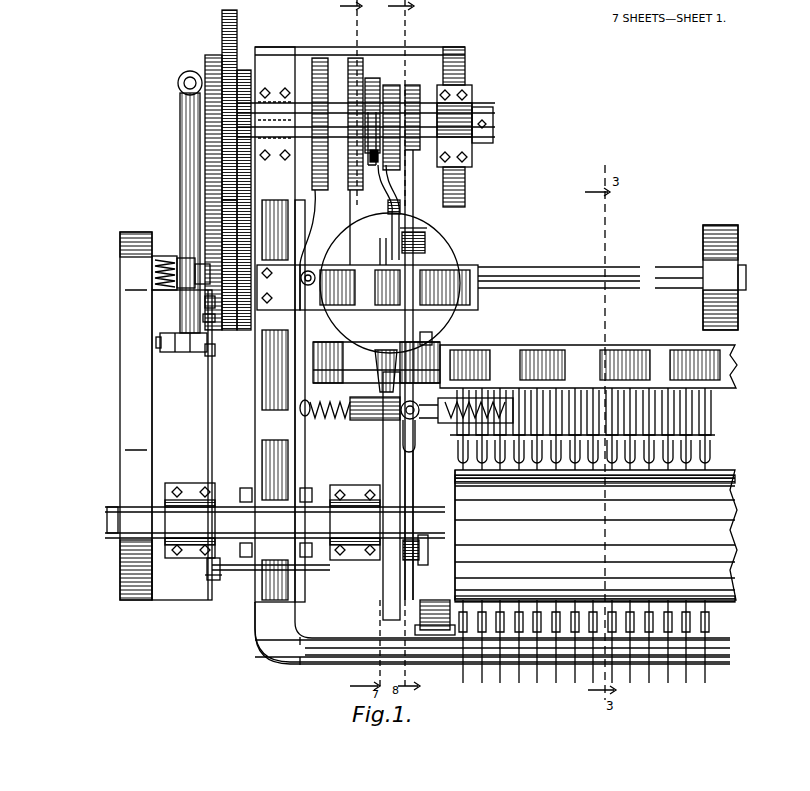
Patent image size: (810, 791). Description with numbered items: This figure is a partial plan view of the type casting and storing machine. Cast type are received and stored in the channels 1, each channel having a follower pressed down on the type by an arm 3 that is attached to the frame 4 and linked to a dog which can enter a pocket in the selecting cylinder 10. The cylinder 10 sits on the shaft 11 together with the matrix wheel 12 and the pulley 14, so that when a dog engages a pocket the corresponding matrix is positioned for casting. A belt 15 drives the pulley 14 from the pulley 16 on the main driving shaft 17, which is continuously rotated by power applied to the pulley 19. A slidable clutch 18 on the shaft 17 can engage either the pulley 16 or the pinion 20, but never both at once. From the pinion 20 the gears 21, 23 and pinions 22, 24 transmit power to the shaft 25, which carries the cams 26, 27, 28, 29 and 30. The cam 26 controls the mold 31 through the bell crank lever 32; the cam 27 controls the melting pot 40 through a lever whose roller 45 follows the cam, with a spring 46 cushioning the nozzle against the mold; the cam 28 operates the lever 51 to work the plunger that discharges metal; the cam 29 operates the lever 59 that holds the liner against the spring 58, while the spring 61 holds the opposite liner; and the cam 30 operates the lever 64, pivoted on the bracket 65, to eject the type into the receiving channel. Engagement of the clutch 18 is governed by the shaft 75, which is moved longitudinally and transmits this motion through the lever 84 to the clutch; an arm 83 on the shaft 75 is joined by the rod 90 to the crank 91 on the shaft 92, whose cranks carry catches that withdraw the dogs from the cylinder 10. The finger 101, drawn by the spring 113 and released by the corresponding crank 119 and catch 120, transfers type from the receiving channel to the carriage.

The channel 1 is at (606, 395).
The arm 3 is at (528, 458).
The frame 4 is at (330, 670).
The selecting cylinder 10 is at (596, 536).
The shaft 11 is at (275, 521).
The matrix wheel 12 is at (382, 585).
The pulley 14 is at (120, 572).
The belt 15 is at (136, 416).
The pulley 16 is at (130, 260).
The shaft 17 is at (556, 276).
The clutch 18 is at (178, 258).
The pulley 19 is at (716, 235).
The pinion 20 is at (210, 356).
The gear 21 is at (222, 32).
The pinion 22 is at (212, 205).
The gear 23 is at (222, 185).
The pinion 24 is at (240, 118).
The shaft 25 is at (493, 125).
The cam 26 is at (357, 62).
The cam 27 is at (393, 90).
The cam 28 is at (372, 82).
The cam 29 is at (320, 62).
The cam 30 is at (412, 88).
The mold 31 is at (372, 420).
The bell crank lever 32 is at (355, 205).
The melting pot 40 is at (392, 228).
The roller 45 is at (385, 165).
The spring 46 is at (400, 205).
The lever 51 is at (377, 251).
The spring 58 is at (336, 425).
The lever 59 is at (300, 350).
The spring 61 is at (485, 398).
The lever 64 is at (415, 205).
The bracket 65 is at (420, 250).
The shaft 75 is at (160, 342).
The arm 83 is at (203, 320).
The lever 84 is at (182, 128).
The rod 90 is at (212, 436).
The crank 91 is at (222, 572).
The shaft 92 is at (327, 566).
The finger 101 is at (417, 432).
The spring 113 is at (415, 495).
The crank 119 is at (418, 545).
The catch 120 is at (412, 540).